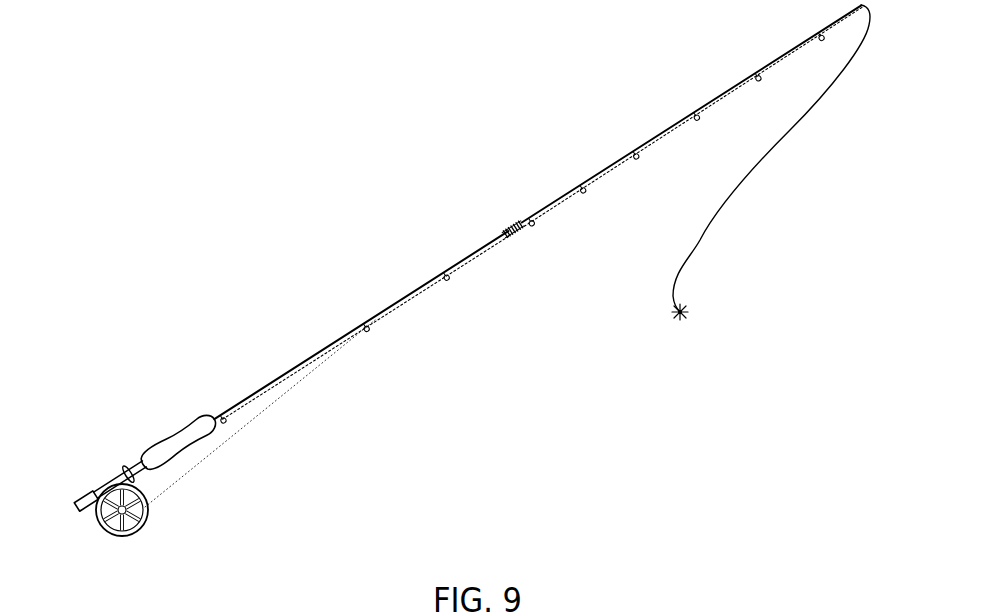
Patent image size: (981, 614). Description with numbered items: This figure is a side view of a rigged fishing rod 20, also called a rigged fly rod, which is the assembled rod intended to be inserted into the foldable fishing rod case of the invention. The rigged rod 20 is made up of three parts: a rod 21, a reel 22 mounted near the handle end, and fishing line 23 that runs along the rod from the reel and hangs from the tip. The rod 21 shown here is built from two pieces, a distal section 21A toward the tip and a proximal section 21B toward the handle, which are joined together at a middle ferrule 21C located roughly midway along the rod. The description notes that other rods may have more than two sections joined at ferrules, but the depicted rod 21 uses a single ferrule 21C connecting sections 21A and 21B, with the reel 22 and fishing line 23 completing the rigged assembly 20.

The rigged fishing rod 20 is at (470, 272).
The rod 21 is at (468, 260).
The distal section 21A is at (639, 140).
The proximal section 21B is at (318, 349).
The middle ferrule 21C is at (512, 226).
The reel 22 is at (149, 517).
The fishing line 23 is at (751, 176).